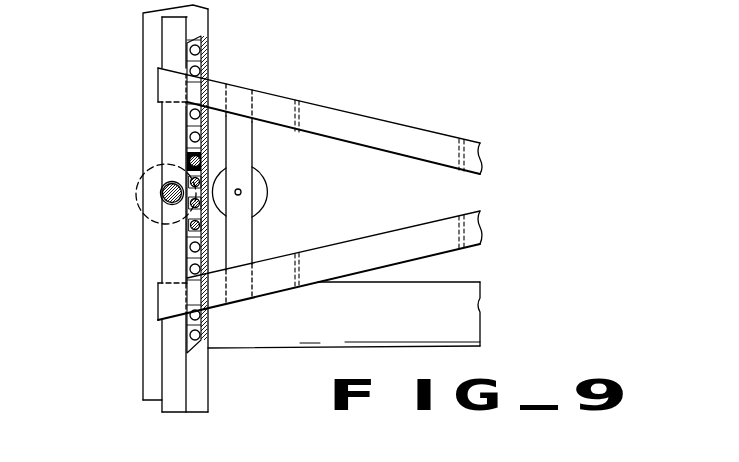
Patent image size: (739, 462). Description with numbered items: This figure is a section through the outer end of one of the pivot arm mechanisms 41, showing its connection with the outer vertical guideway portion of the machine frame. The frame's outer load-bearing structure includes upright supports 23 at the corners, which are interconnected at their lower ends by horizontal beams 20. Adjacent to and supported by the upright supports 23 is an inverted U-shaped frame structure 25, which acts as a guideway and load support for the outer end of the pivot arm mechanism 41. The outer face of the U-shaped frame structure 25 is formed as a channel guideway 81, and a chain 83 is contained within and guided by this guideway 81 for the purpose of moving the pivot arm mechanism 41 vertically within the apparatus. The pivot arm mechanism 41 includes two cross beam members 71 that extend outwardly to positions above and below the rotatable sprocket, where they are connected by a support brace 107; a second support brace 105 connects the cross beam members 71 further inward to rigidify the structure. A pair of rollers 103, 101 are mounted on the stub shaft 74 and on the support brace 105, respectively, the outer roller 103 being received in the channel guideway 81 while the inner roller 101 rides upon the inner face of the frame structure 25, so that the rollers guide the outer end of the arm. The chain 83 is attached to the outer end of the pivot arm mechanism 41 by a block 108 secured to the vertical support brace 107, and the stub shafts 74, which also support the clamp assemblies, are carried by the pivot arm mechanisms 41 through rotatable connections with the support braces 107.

The horizontal beam 20 is at (482, 306).
The upright support 23 is at (150, 39).
The inverted U-shaped frame structure 25 is at (198, 25).
The pivot arm mechanism 41 is at (403, 123).
The cross beam member 71 is at (482, 212).
The stub shaft 74 is at (162, 198).
The channel guideway 81 is at (224, 257).
The chain 83 is at (200, 60).
The roller 101 is at (262, 182).
The roller 103 is at (150, 182).
The second support brace 105 is at (247, 166).
The support brace 107 is at (168, 147).
The block 108 is at (166, 212).